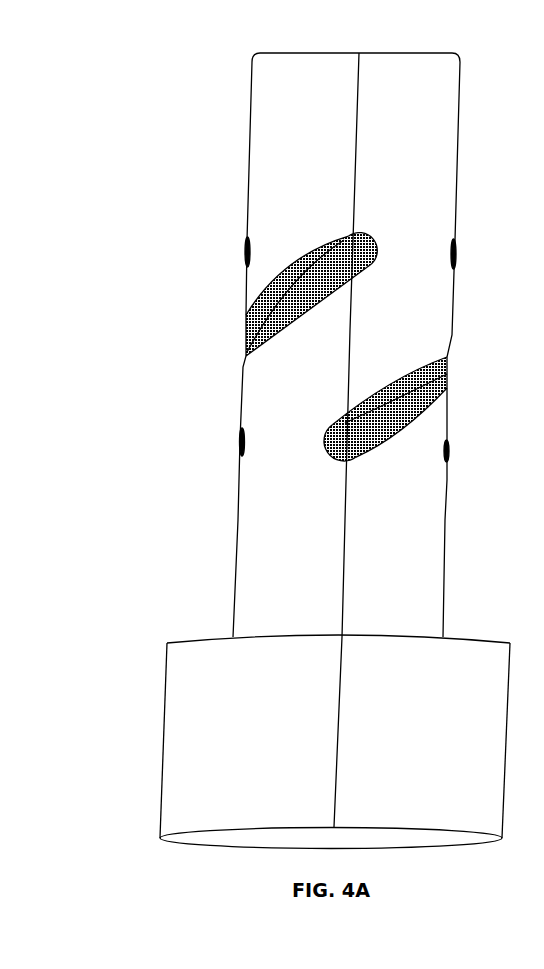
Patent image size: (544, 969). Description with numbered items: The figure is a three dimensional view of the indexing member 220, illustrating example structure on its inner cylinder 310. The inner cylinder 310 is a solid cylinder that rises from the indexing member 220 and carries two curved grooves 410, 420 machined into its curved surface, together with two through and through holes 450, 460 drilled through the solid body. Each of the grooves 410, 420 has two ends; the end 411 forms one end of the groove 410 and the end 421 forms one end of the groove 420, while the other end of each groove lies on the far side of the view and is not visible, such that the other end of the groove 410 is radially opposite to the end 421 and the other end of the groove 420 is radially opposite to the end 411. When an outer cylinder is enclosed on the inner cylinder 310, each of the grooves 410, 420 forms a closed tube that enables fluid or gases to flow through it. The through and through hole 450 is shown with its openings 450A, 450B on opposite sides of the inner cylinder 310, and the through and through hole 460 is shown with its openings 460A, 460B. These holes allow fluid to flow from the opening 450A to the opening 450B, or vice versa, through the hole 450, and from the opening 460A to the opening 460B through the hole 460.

The inner cylinder 310 is at (242, 168).
The indexing member 220 is at (163, 733).
The groove 410 is at (372, 421).
The end of groove 410 411 is at (333, 461).
The groove 420 is at (330, 280).
The end of groove 420 421 is at (364, 233).
The through and through hole 450 is at (364, 279).
The opening 450A is at (453, 270).
The opening 450B is at (247, 268).
The through and through hole 460 is at (353, 468).
The opening 460A is at (447, 462).
The opening 460B is at (239, 458).